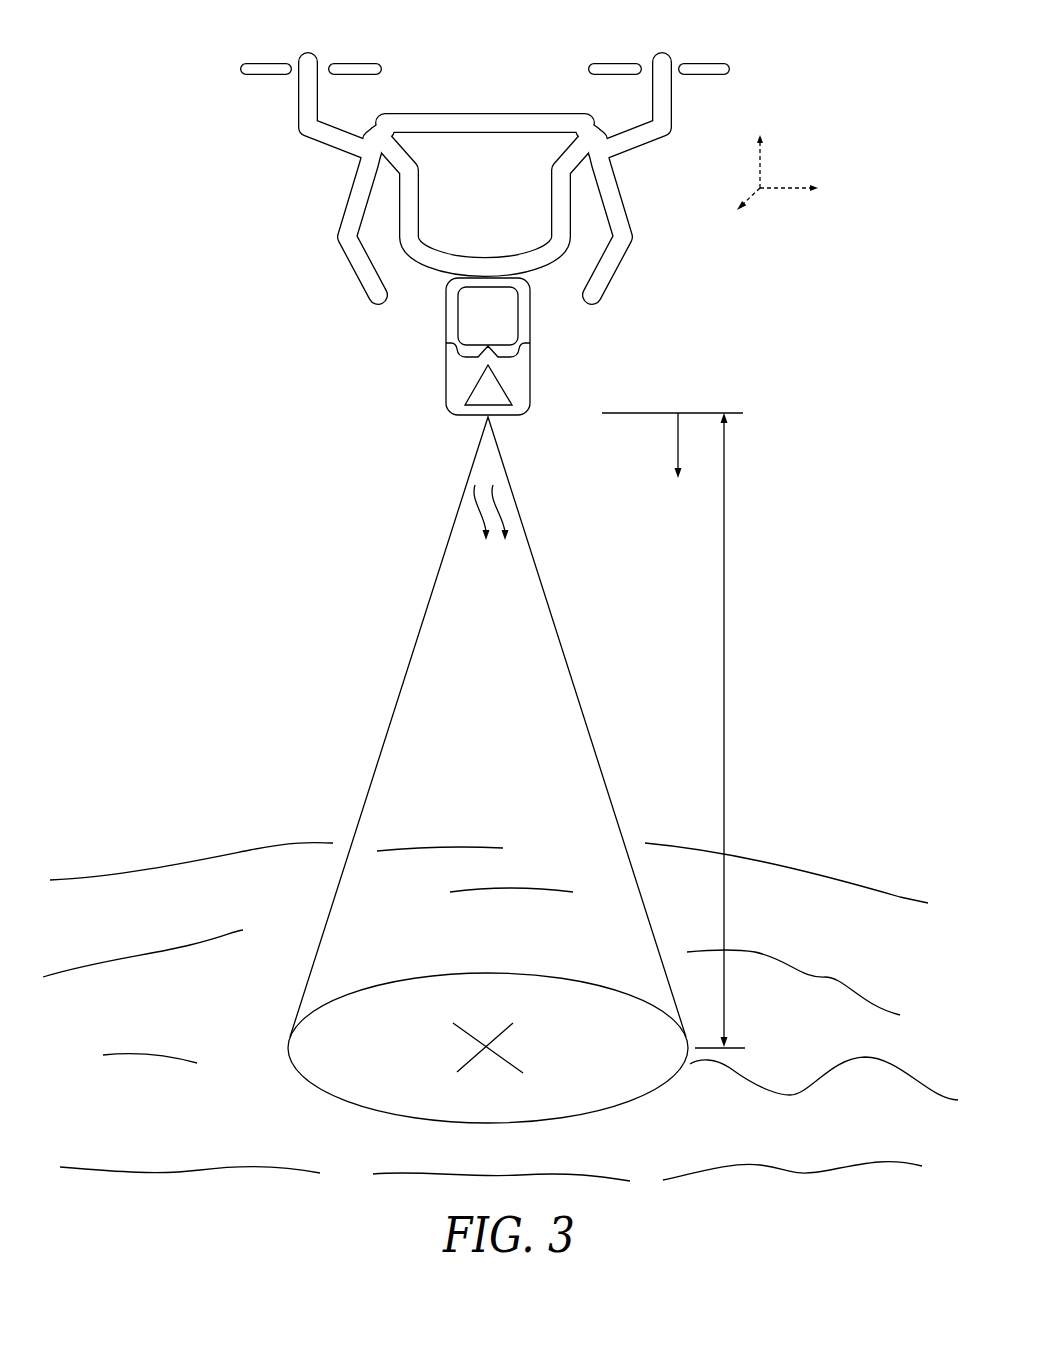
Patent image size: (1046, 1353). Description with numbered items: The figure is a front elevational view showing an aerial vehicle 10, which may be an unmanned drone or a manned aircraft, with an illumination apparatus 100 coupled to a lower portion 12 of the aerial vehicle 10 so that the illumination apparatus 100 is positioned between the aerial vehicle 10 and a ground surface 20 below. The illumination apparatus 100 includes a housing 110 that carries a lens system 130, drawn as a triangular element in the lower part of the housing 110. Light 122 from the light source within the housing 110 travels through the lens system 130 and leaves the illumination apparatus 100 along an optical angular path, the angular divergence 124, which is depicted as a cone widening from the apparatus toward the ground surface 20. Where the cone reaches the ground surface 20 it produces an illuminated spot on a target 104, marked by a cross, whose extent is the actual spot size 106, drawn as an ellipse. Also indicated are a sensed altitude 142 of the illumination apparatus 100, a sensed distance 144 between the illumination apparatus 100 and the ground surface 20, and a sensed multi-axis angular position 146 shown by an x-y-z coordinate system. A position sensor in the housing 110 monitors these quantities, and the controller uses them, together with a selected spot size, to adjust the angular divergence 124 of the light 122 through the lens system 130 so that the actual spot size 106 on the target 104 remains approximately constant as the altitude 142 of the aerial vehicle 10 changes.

The aerial vehicle 10 is at (485, 191).
The lower portion 12 is at (532, 270).
The ground surface 20 is at (787, 891).
The illumination apparatus 100 is at (485, 346).
The target 104 is at (455, 1069).
The actual spot size 106 is at (343, 996).
The housing 110 is at (530, 331).
The light 122 is at (500, 515).
The angular divergence 124 is at (473, 463).
The lens system 130 is at (530, 377).
The sensed altitude 142 is at (678, 434).
The sensed distance 144 is at (726, 525).
The sensed multi-axis angular position 146 is at (768, 180).